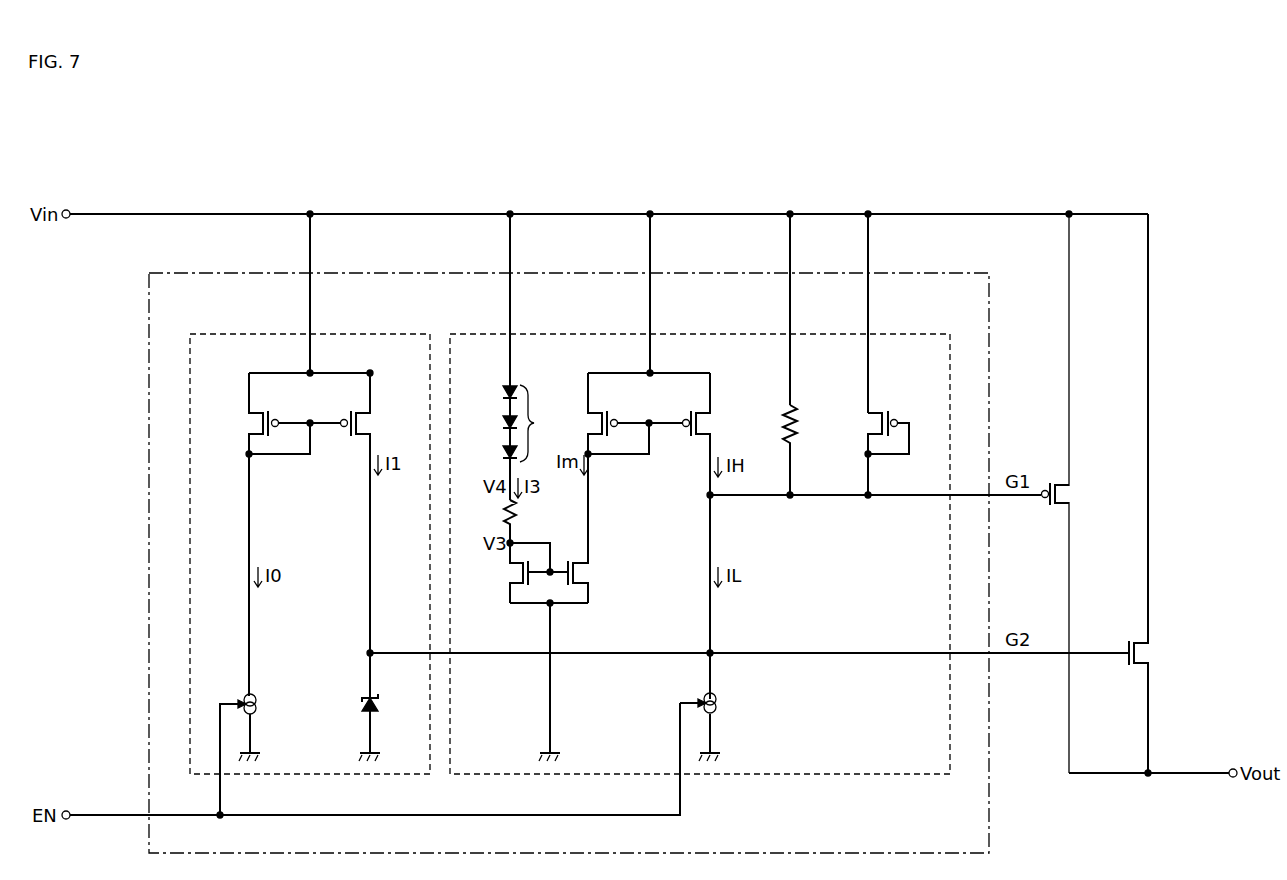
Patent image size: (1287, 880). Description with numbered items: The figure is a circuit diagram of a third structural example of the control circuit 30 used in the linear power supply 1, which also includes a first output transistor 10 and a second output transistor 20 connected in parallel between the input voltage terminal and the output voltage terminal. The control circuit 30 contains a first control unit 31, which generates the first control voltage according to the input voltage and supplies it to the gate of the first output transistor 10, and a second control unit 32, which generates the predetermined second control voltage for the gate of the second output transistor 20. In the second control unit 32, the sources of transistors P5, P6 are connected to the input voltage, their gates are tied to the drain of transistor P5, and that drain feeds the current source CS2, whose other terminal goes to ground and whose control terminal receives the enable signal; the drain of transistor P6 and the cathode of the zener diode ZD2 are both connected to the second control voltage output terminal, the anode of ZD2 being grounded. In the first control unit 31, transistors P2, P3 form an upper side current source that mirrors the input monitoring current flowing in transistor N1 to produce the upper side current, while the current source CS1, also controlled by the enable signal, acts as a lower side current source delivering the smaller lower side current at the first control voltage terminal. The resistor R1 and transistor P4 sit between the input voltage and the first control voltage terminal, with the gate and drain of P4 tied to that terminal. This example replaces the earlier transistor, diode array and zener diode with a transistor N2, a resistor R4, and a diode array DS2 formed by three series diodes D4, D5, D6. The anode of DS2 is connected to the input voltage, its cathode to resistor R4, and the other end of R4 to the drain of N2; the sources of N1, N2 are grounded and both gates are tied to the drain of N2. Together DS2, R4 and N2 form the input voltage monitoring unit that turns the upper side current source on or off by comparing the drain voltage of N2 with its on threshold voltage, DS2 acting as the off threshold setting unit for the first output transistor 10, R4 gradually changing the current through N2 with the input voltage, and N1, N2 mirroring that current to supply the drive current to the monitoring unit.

The linear power supply 1 is at (1188, 173).
The first output transistor 10 is at (1074, 496).
The second output transistor 20 is at (1152, 655).
The control circuit 30 is at (574, 273).
The first control unit 31 is at (714, 334).
The second control unit 32 is at (374, 334).
The P-channel MOS field-effect transistor P2 is at (590, 417).
The P-channel MOS field-effect transistor P3 is at (712, 424).
The P-channel MOS field-effect transistor P4 is at (890, 420).
The P-channel MOS field-effect transistor P5 is at (248, 422).
The P-channel MOS field-effect transistor P6 is at (371, 421).
The N-channel MOS field-effect transistor N1 is at (593, 574).
The transistor N2 is at (510, 574).
The resistor R1 is at (798, 424).
The resistor R4 is at (501, 516).
The diode D4 is at (500, 395).
The diode D5 is at (500, 425).
The diode D6 is at (500, 455).
The diode array DS2 is at (548, 423).
The zener diode ZD2 is at (379, 704).
The current source CS1 is at (720, 704).
The current source CS2 is at (260, 704).